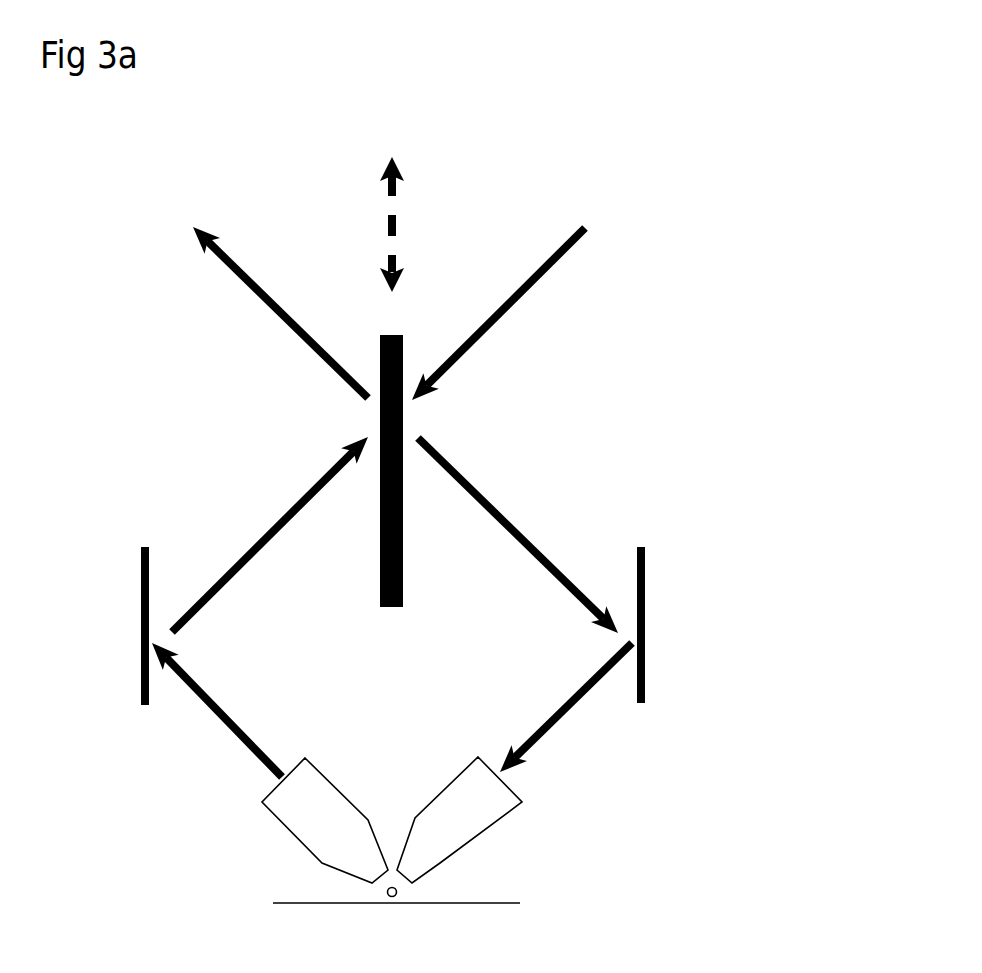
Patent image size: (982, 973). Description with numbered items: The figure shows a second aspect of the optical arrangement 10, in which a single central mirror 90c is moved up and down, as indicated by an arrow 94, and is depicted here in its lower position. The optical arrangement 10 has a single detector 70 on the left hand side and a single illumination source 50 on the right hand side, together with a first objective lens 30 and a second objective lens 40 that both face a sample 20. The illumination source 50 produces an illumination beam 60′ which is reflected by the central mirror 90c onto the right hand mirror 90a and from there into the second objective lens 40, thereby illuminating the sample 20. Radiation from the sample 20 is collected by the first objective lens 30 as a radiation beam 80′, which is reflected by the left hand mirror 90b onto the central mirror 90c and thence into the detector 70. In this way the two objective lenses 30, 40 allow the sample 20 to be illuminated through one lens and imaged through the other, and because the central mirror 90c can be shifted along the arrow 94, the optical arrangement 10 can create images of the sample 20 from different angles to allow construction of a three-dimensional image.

The optical arrangement 10 is at (838, 55).
The sample 20 is at (399, 902).
The first objective lens 30 is at (319, 820).
The second objective lens 40 is at (484, 820).
The illumination source 50 is at (529, 279).
The illumination beam 60′ is at (525, 537).
The detector 70 is at (250, 278).
The radiation beam 80′ is at (260, 607).
The right hand mirror 90a is at (675, 625).
The left hand mirror 90b is at (111, 626).
The central mirror 90c is at (422, 471).
The arrow 94 is at (413, 224).